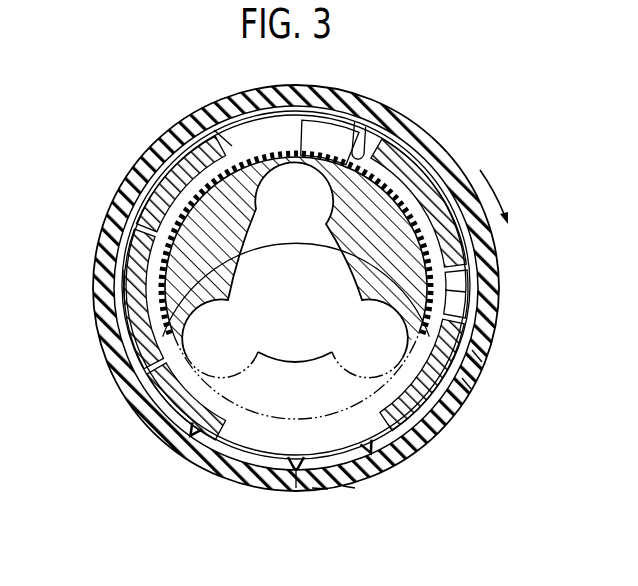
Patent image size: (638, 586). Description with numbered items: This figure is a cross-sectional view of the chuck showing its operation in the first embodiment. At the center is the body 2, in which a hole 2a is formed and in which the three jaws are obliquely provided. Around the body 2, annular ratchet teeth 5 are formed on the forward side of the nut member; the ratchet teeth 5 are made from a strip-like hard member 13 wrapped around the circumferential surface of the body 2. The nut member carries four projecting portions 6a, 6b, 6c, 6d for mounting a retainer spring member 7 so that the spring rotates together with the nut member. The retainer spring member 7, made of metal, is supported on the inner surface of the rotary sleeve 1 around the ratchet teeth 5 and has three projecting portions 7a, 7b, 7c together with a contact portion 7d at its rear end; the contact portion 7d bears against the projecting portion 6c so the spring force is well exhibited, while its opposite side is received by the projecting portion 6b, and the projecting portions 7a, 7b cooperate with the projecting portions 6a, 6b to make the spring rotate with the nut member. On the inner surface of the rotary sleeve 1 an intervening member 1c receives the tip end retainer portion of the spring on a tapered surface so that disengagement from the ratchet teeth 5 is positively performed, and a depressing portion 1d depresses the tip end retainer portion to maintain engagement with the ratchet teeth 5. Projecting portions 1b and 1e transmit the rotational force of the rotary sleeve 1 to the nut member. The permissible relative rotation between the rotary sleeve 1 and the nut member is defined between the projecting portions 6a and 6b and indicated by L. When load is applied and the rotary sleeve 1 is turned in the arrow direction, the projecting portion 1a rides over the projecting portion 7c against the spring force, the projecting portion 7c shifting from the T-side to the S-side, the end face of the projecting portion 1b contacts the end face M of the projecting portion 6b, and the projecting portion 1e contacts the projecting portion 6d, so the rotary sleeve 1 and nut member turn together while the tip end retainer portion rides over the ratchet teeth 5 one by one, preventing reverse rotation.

The rotary sleeve 1 is at (500, 306).
The projecting portion 1a is at (320, 492).
The projecting portion 1b is at (493, 257).
The intervening member 1c is at (305, 115).
The depressing portion 1d is at (222, 133).
The projecting portion 1e is at (124, 287).
The body 2 is at (167, 230).
The hole 2a is at (259, 214).
The ratchet teeth 5 is at (218, 160).
The projecting portion 6a is at (447, 167).
The projecting portion 6b is at (433, 437).
The projecting portion 6c is at (152, 425).
The projecting portion 6d is at (180, 183).
The retainer spring member 7 is at (243, 128).
The projecting portion 7a is at (390, 117).
The projecting portion 7b is at (398, 463).
The projecting portion 7c is at (257, 488).
The contact portion 7d is at (180, 447).
The strip-like hard member 13 is at (143, 343).
The predetermined angle L is at (477, 357).
The end face M is at (467, 383).
The S-side S is at (350, 487).
The T-side T is at (302, 490).